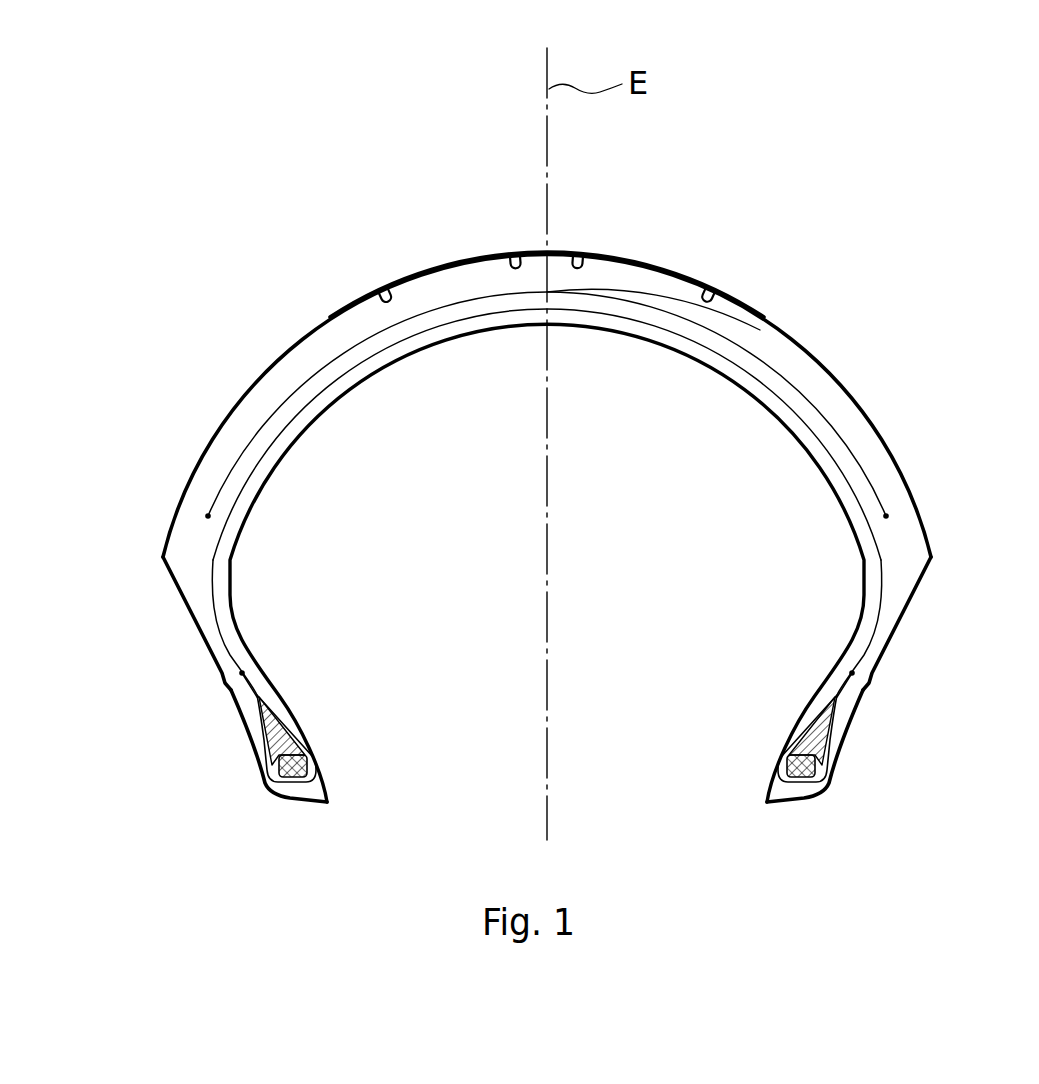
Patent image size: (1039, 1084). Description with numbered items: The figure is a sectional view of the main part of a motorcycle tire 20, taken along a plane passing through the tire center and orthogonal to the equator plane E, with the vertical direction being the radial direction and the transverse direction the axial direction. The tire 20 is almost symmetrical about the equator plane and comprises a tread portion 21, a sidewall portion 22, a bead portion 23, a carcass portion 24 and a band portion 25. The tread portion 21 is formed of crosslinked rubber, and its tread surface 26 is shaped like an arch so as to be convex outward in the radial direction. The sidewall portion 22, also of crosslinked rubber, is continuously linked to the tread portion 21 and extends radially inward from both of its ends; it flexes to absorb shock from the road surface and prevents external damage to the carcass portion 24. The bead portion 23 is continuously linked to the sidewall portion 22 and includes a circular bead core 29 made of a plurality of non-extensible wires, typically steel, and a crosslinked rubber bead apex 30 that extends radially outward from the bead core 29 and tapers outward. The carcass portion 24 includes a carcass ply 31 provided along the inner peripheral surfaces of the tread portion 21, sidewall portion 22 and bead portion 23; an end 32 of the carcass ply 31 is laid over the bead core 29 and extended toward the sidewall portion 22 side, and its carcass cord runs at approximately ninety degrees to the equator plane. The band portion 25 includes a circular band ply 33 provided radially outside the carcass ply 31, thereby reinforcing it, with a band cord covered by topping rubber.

The tire 20 is at (855, 92).
The tread portion 21 is at (487, 238).
The sidewall portion 22 is at (140, 606).
The bead portion 23 is at (260, 813).
The carcass portion 24 is at (907, 533).
The band portion 25 is at (815, 379).
The tread surface 26 is at (418, 273).
The bead core 29 is at (312, 770).
The bead apex 30 is at (287, 733).
The carcass ply 31 is at (732, 363).
The end of the carcass ply 32 is at (253, 697).
The band ply 33 is at (368, 338).